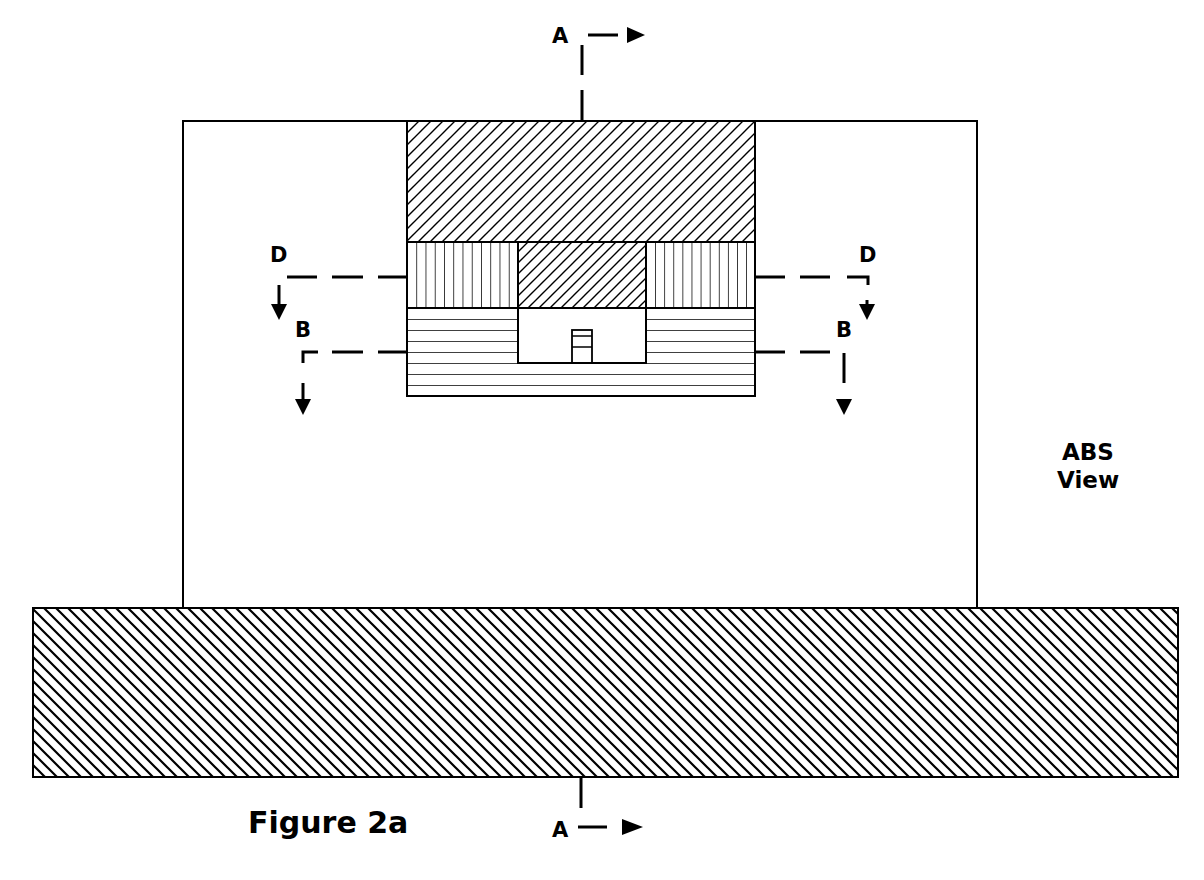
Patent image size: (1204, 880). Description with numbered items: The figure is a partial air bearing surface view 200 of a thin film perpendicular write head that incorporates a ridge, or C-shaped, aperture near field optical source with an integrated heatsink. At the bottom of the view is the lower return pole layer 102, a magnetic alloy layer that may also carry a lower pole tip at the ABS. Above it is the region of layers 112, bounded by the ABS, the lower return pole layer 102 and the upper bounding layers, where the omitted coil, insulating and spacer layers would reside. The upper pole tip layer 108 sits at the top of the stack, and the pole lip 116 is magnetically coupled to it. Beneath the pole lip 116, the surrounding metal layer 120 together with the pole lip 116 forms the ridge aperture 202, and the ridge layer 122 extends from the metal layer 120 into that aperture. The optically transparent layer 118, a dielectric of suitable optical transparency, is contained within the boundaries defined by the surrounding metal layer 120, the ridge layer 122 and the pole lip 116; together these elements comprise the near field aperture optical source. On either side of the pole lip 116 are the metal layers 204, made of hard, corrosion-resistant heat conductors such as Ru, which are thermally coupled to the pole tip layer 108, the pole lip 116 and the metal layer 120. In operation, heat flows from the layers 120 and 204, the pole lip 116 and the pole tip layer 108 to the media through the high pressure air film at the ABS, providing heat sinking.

The partial air bearing surface view 200 is at (1027, 122).
The lower return pole layer 102 is at (604, 709).
The layers 112 is at (766, 556).
The upper pole tip layer 108 is at (557, 183).
The metal layers 204 is at (486, 292).
The pole lip 116 is at (606, 292).
The surrounding metal layer 120 is at (726, 364).
The optically transparent layer 118 is at (534, 331).
The ridge layer 122 is at (582, 352).
The ridge aperture 202 is at (650, 365).